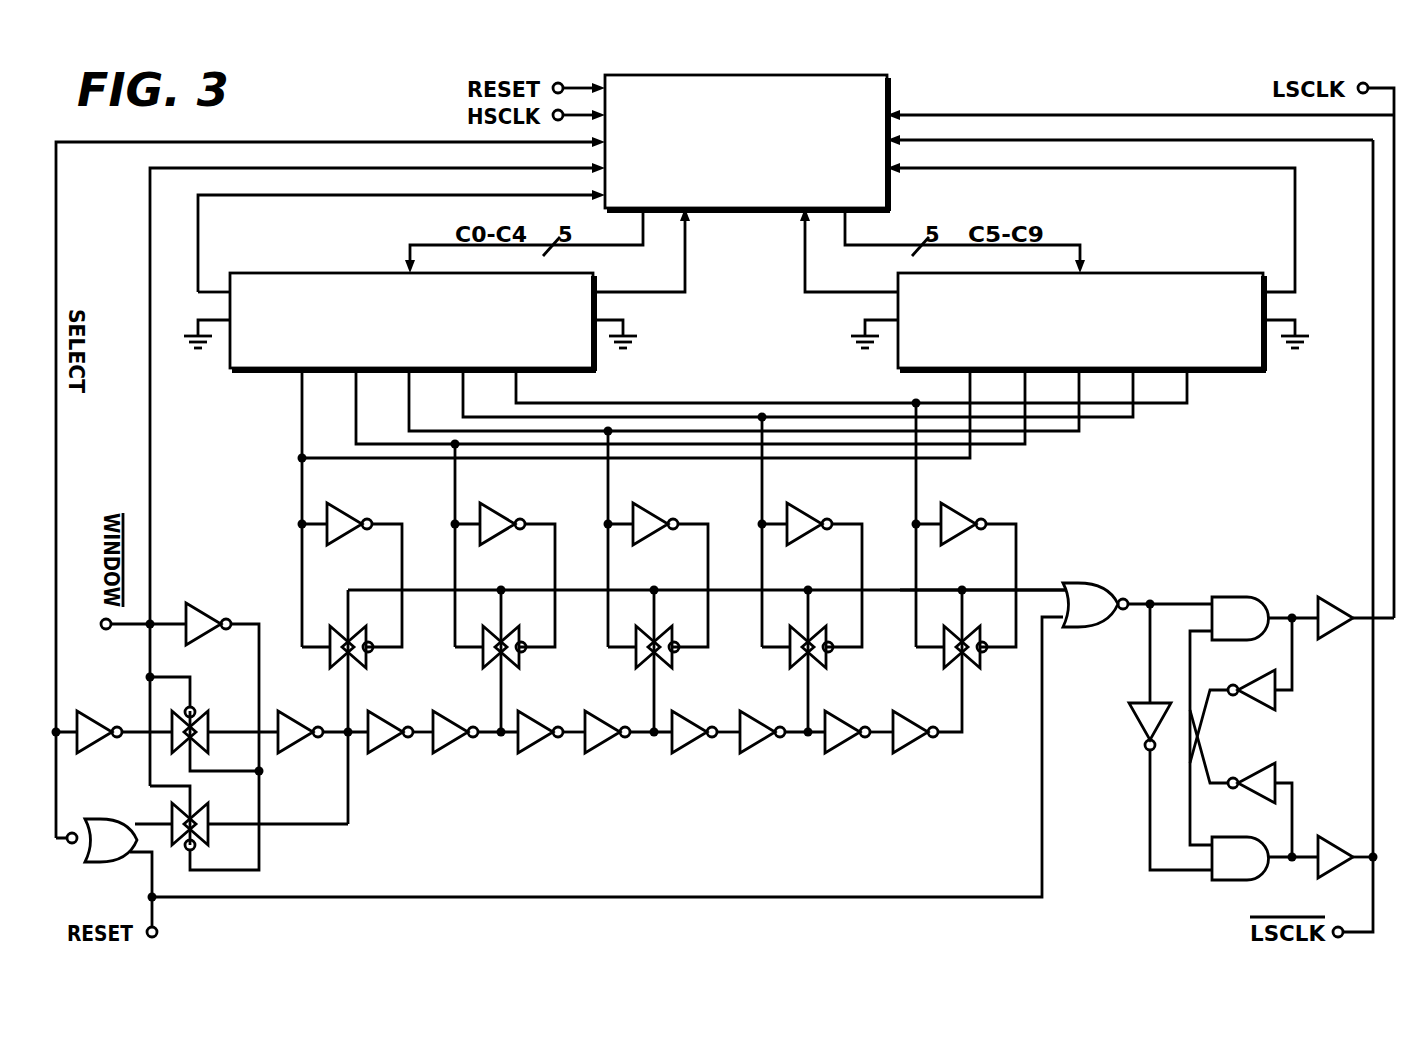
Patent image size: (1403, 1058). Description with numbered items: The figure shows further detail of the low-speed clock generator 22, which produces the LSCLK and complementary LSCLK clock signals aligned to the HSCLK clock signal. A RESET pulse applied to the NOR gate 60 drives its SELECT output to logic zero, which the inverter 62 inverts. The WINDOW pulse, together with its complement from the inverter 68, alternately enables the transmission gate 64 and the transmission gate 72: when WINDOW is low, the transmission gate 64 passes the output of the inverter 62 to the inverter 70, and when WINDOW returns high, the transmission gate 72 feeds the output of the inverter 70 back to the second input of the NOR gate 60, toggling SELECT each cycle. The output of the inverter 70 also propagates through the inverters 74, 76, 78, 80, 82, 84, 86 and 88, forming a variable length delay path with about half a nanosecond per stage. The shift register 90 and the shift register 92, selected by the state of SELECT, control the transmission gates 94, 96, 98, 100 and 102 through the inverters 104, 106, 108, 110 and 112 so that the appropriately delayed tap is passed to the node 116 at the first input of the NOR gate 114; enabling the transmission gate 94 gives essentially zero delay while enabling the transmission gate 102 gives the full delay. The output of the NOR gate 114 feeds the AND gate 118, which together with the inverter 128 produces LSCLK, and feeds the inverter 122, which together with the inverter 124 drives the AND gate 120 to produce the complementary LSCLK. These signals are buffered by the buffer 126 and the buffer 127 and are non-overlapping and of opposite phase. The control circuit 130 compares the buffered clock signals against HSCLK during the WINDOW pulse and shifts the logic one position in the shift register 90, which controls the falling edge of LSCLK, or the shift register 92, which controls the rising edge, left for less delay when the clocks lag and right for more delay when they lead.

The low-speed clock generator 22 is at (374, 118).
The NOR gate 60 is at (99, 815).
The inverter 62 is at (94, 716).
The transmission gate 64 is at (210, 718).
The inverter 68 is at (202, 610).
The inverter 70 is at (300, 752).
The transmission gate 72 is at (210, 816).
The inverter 74 is at (390, 752).
The inverter 76 is at (455, 752).
The inverter 78 is at (540, 752).
The inverter 80 is at (607, 752).
The inverter 82 is at (694, 752).
The inverter 84 is at (762, 752).
The inverter 86 is at (847, 752).
The inverter 88 is at (915, 752).
The shift register 90 is at (252, 371).
The shift register 92 is at (1215, 371).
The transmission gate 94 is at (358, 670).
The transmission gate 96 is at (511, 670).
The transmission gate 98 is at (664, 670).
The transmission gate 100 is at (818, 670).
The transmission gate 102 is at (972, 670).
The inverter 104 is at (348, 513).
The inverter 106 is at (501, 513).
The inverter 108 is at (654, 513).
The inverter 110 is at (808, 513).
The inverter 112 is at (961, 513).
The NOR gate 114 is at (1095, 583).
The node 116 is at (962, 588).
The AND gate 118 is at (1223, 596).
The AND gate 120 is at (1224, 882).
The inverter 122 is at (1140, 721).
The inverter 124 is at (1278, 703).
The buffer 126 is at (1330, 597).
The buffer 127 is at (1340, 830).
The inverter 128 is at (1277, 770).
The control circuit 130 is at (748, 210).